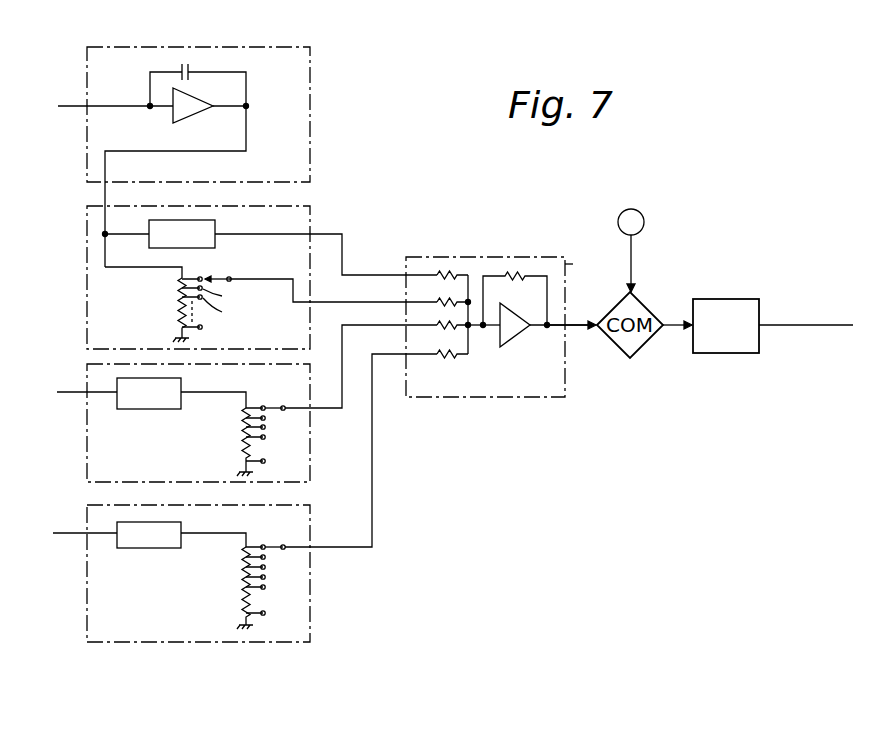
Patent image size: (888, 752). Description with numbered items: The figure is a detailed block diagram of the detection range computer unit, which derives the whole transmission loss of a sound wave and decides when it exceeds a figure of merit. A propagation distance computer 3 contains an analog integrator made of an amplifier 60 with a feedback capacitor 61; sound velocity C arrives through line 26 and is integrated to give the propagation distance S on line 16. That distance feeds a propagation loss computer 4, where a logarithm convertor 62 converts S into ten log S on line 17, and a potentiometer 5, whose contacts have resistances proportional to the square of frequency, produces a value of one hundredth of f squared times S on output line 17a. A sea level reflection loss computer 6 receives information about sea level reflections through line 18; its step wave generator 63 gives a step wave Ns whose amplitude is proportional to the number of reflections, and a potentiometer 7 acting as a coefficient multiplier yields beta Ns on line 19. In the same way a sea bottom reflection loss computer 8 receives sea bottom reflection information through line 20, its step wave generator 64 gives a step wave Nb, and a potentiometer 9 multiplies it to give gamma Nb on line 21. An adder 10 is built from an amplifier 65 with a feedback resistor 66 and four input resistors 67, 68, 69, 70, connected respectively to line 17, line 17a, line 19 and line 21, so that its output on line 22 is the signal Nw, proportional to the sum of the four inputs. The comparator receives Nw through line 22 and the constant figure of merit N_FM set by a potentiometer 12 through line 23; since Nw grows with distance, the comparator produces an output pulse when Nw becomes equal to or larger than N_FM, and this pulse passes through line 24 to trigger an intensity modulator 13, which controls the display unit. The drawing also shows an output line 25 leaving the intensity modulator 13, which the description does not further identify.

The propagation distance computer 3 is at (310, 62).
The line 26 is at (58, 106).
The amplifier 60 is at (212, 112).
The feedback capacitor 61 is at (168, 72).
The line 16 is at (105, 192).
The propagation loss computer 4 is at (310, 212).
The logarithm convertor 62 is at (215, 245).
The potentiometer 5 is at (178, 307).
The line 17 is at (342, 240).
The output line 17a is at (318, 304).
The sea level reflection loss computer 6 is at (334, 360).
The line 18 is at (57, 392).
The step wave generator 63 is at (150, 409).
The potentiometer 7 is at (240, 436).
The line 19 is at (392, 328).
The sea bottom reflection loss computer 8 is at (310, 512).
The line 20 is at (58, 533).
The step wave generator 64 is at (140, 548).
The potentiometer 9 is at (242, 586).
The line 21 is at (372, 478).
The adder 10 is at (560, 257).
The input resistor 67 is at (453, 270).
The input resistor 68 is at (452, 301).
The input resistor 69 is at (466, 330).
The input resistor 70 is at (445, 358).
The amplifier 65 is at (517, 338).
The feedback resistor 66 is at (515, 282).
The line 22 is at (577, 328).
The potentiometer 12 is at (632, 222).
The line 23 is at (634, 252).
The line 24 is at (673, 328).
The intensity modulator 13 is at (737, 299).
The output line 25 is at (805, 326).